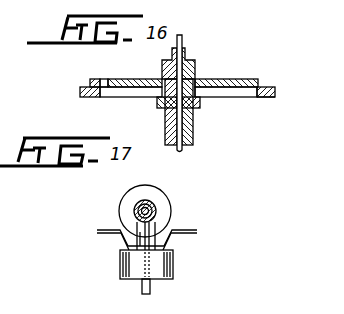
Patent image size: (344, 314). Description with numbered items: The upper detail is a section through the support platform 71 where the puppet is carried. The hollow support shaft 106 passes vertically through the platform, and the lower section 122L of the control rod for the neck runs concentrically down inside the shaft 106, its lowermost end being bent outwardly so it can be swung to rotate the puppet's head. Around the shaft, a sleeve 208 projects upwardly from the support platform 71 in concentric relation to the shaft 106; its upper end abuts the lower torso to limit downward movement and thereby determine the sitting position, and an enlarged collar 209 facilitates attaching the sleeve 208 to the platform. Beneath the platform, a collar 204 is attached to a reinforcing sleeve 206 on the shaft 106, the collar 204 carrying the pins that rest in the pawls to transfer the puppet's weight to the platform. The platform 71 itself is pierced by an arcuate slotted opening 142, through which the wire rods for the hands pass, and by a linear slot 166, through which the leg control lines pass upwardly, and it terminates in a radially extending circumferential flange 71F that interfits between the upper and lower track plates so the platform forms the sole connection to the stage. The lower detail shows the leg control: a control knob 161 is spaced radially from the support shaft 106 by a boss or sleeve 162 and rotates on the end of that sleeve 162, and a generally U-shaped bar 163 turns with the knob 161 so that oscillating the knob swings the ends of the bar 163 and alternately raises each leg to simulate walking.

In FIG. 16, the lower section of the control rod 122L is at (183, 36).
In FIG. 17, the lower section of the control rod 122L is at (150, 212).
In FIG. 16, the support shaft 106 is at (167, 70).
In FIG. 17, the support shaft 106 is at (154, 205).
In FIG. 16, the linear slot 166 is at (200, 82).
In FIG. 16, the support platform 71 is at (233, 79).
In FIG. 16, the slotted opening 142 is at (246, 81).
In FIG. 16, the circumferential flange 71F is at (270, 93).
In FIG. 16, the collar 204 is at (198, 103).
In FIG. 16, the reinforcing sleeve 206 is at (198, 110).
In FIG. 16, the sleeve 208 is at (170, 73).
In FIG. 16, the enlarged collar 209 is at (160, 76).
In FIG. 17, the control knob 161 is at (122, 271).
In FIG. 17, the sleeve 162 is at (141, 240).
In FIG. 17, the U-shaped bar 163 is at (172, 241).